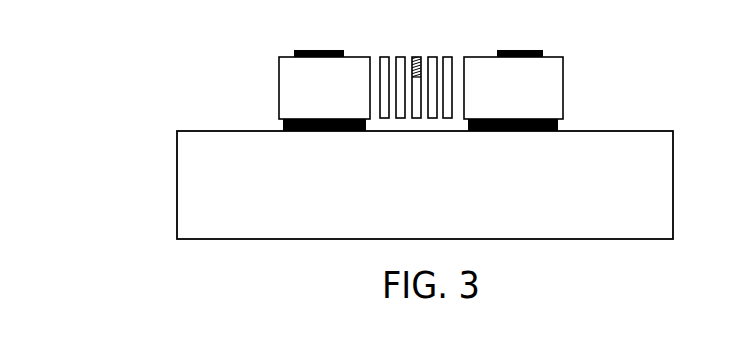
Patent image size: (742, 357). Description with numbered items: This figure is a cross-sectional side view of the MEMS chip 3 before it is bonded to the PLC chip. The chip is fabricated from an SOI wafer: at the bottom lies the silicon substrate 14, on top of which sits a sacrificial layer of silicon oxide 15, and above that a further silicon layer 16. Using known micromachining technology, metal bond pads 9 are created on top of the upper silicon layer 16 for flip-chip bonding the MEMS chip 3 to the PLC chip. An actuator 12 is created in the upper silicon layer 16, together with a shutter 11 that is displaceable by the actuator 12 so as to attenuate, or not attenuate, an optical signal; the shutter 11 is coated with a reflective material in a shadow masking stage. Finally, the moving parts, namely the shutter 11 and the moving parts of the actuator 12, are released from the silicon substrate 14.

The MEMS chip 3 is at (147, 169).
The metal bond pads 9 is at (321, 50).
The shutter 11 is at (415, 57).
The actuator 12 is at (386, 57).
The silicon substrate 14 is at (673, 173).
The sacrificial layer of silicon oxide 15 is at (558, 128).
The further silicon layer 16 is at (563, 68).